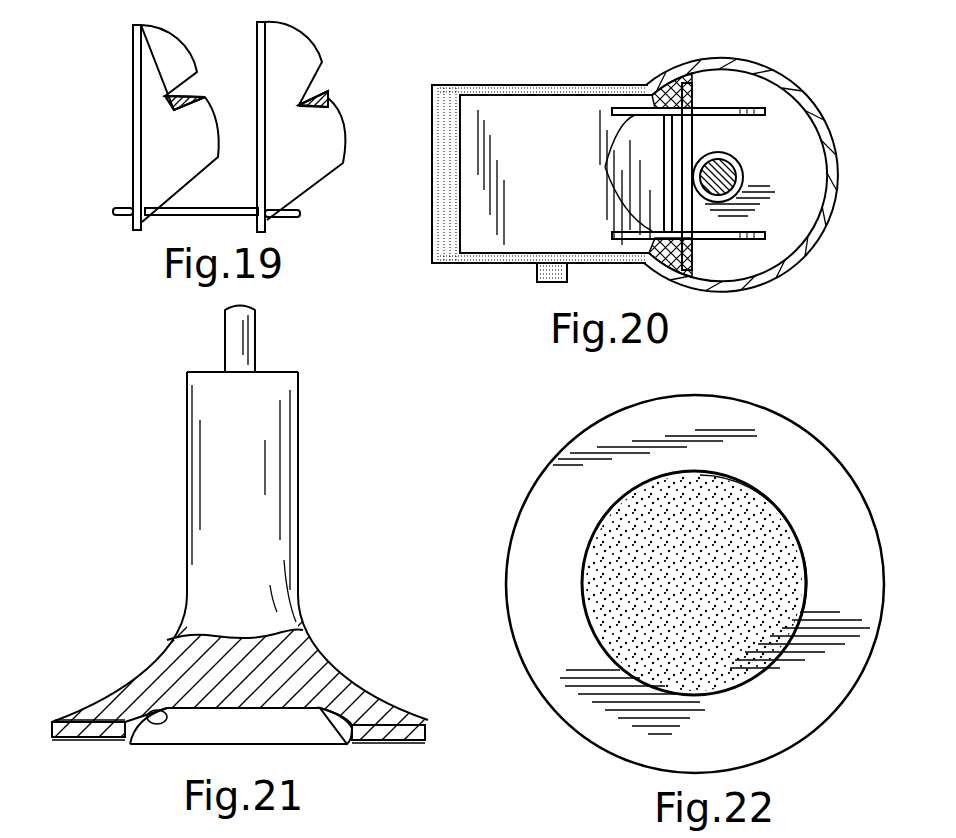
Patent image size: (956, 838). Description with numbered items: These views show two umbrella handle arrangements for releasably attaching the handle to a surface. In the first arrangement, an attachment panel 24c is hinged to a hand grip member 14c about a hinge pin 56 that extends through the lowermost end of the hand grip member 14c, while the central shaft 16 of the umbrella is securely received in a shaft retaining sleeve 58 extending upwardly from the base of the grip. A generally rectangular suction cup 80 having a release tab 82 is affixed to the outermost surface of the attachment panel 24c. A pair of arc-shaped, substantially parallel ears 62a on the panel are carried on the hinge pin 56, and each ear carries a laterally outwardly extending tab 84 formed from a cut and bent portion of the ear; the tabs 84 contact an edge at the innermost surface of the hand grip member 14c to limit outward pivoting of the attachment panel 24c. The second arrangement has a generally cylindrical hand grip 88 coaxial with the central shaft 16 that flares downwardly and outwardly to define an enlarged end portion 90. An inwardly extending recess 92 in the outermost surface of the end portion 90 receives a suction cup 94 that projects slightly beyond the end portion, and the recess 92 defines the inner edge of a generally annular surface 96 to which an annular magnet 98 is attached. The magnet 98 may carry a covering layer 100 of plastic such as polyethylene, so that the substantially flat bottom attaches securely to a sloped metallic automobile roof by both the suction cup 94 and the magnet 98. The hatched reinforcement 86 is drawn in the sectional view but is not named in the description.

In FIG. 20, the hand grip member 14c is at (767, 73).
In FIG. 20, the central shaft 16 is at (728, 168).
In FIG. 21, the central shaft 16 is at (253, 340).
In FIG. 20, the attachment panel 24c is at (553, 207).
In FIG. 19, the hinge pin 56 is at (196, 210).
In FIG. 20, the hinge pin 56 is at (693, 140).
In FIG. 20, the shaft retaining sleeve 58 is at (745, 183).
In FIG. 19, the ears 62a is at (148, 133).
In FIG. 20, the ears 62a is at (605, 167).
In FIG. 20, the suction cup 80 is at (432, 230).
In FIG. 20, the release tab 82 is at (535, 270).
In FIG. 19, the tab 84 is at (184, 98).
In FIG. 20, the tab 84 is at (692, 92).
In FIG. 20, the reinforcement 86 is at (677, 85).
In FIG. 21, the hand grip 88 is at (285, 495).
In FIG. 22, the hand grip 88 is at (767, 413).
In FIG. 21, the enlarged end portion 90 is at (407, 710).
In FIG. 21, the recess 92 is at (160, 712).
In FIG. 21, the suction cup 94 is at (297, 748).
In FIG. 22, the suction cup 94 is at (768, 523).
In FIG. 21, the annular surface 96 is at (100, 722).
In FIG. 21, the annular magnet 98 is at (70, 728).
In FIG. 21, the covering layer 100 is at (63, 745).
In FIG. 22, the covering layer 100 is at (630, 428).